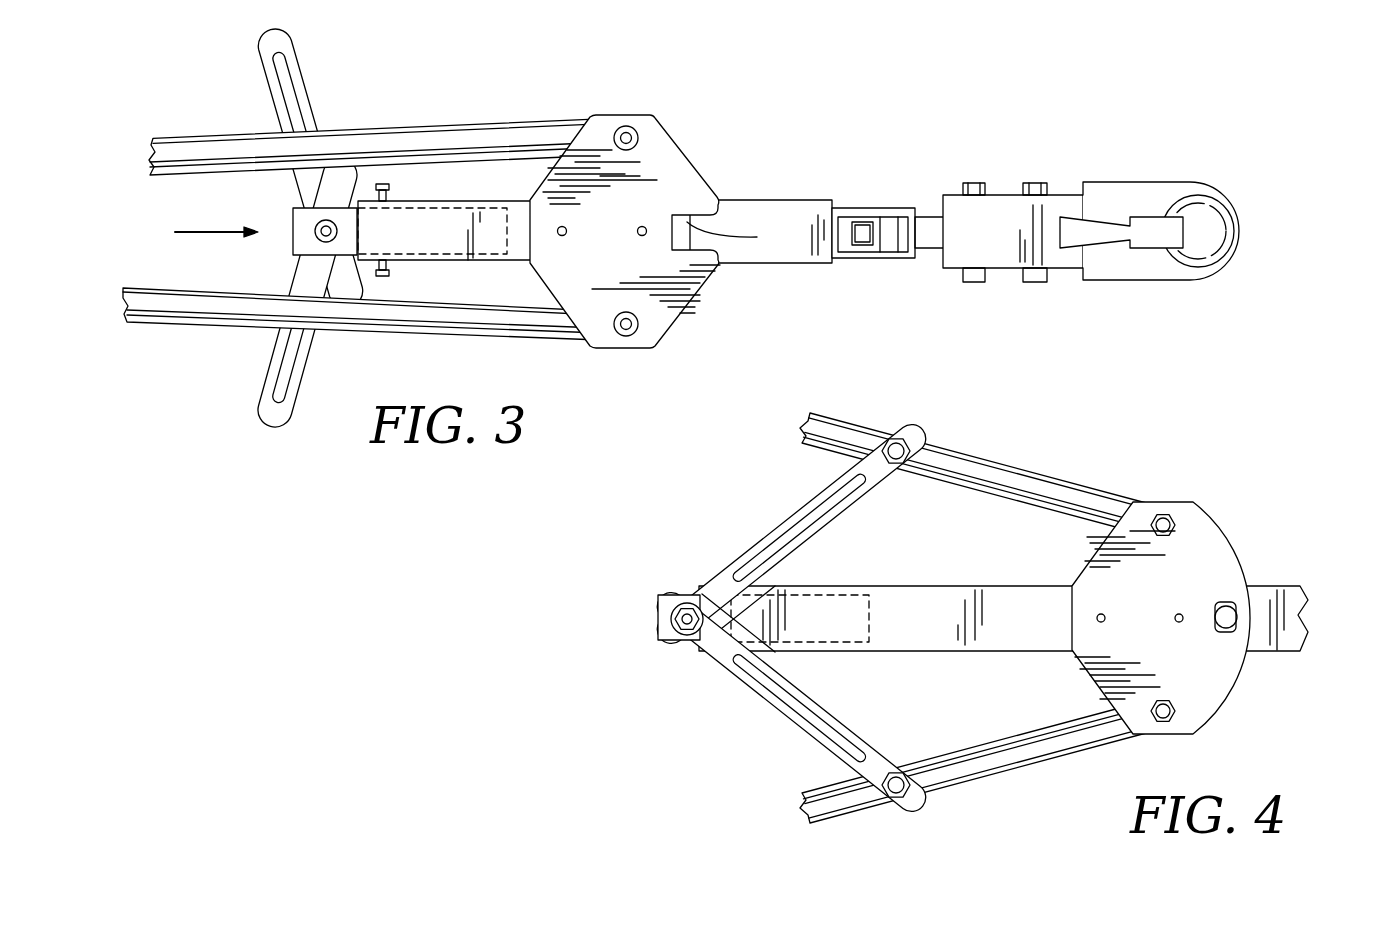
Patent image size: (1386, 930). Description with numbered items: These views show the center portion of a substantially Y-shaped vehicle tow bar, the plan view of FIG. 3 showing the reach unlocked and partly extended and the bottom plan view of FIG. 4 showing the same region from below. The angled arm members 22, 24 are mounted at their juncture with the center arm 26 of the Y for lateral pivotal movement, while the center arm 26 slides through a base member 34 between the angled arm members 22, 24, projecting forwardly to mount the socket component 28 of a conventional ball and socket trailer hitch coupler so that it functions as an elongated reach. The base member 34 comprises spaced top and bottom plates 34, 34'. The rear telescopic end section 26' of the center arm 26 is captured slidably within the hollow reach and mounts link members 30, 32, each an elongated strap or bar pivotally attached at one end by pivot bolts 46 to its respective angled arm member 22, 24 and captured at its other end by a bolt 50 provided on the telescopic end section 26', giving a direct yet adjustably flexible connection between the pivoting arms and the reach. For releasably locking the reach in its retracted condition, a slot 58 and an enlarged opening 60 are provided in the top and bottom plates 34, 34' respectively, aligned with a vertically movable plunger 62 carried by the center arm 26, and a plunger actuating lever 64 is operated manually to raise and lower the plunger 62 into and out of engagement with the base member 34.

In FIG. 3, the angled arm member 22 is at (227, 327).
In FIG. 4, the angled arm member 22 is at (1045, 475).
In FIG. 3, the angled arm member 24 is at (227, 138).
In FIG. 4, the angled arm member 24 is at (1083, 752).
In FIG. 3, the center arm 26 is at (595, 223).
In FIG. 4, the center arm 26 is at (1026, 621).
In FIG. 3, the telescopic end section 26' is at (288, 219).
In FIG. 4, the telescopic end section 26' is at (650, 597).
In FIG. 3, the socket component 28 is at (1057, 205).
In FIG. 3, the link member 30 is at (312, 108).
In FIG. 4, the link member 30 is at (790, 519).
In FIG. 3, the link member 32 is at (297, 400).
In FIG. 4, the link member 32 is at (800, 725).
In FIG. 3, the base member 34 is at (642, 227).
In FIG. 4, the bottom plate 34' is at (1175, 630).
In FIG. 4, the pivot bolt 46 is at (905, 446).
In FIG. 3, the bolt 50 is at (312, 231).
In FIG. 4, the bolt 50 is at (665, 627).
In FIG. 3, the slot 58 is at (698, 218).
In FIG. 4, the enlarged opening 60 is at (1213, 610).
In FIG. 4, the plunger 62 is at (1228, 636).
In FIG. 3, the plunger actuating lever 64 is at (927, 235).